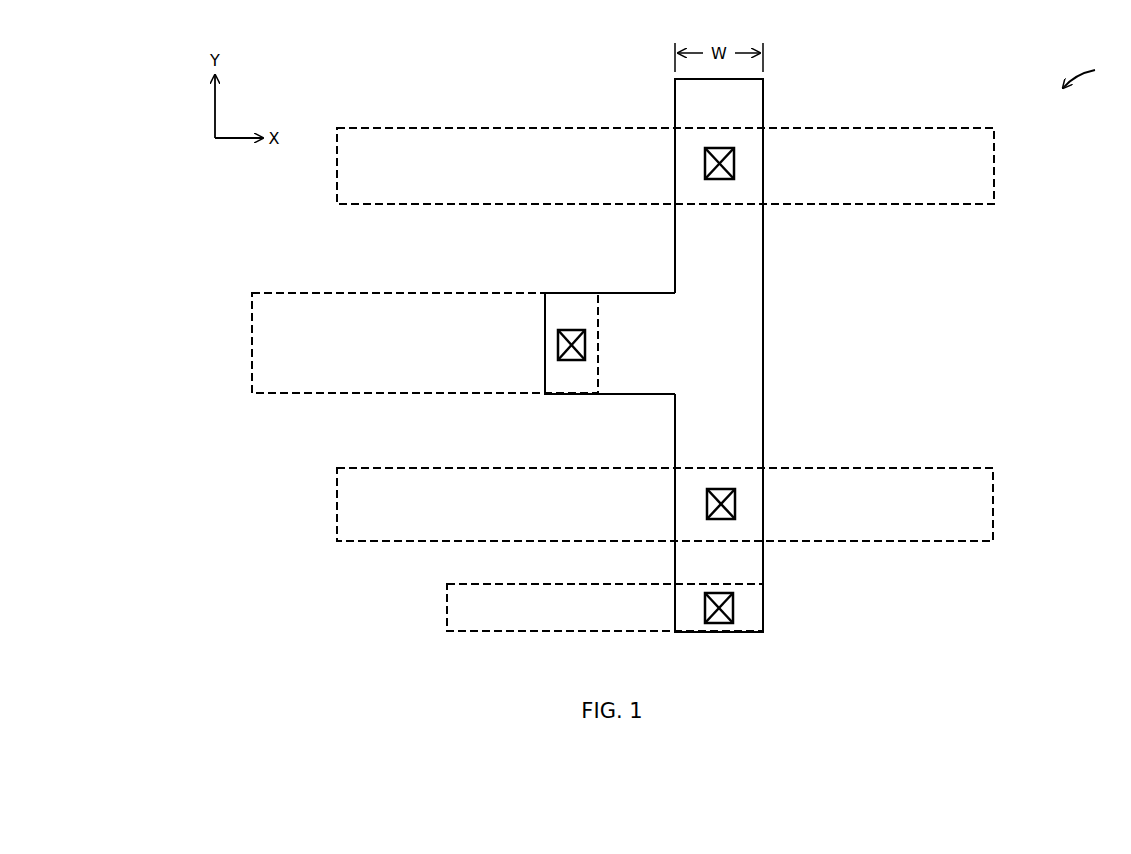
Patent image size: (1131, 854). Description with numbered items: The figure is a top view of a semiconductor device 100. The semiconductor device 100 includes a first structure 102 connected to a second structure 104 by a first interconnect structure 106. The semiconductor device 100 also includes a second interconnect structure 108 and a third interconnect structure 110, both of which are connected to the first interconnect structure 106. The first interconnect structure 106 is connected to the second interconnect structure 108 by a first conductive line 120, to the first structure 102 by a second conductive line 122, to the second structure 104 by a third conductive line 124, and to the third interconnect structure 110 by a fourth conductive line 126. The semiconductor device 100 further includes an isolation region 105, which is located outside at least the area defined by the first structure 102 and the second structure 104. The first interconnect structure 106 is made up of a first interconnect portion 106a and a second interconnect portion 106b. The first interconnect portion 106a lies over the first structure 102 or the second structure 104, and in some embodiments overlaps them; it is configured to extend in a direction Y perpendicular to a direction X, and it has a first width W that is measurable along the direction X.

The semiconductor device 100 is at (1082, 60).
The first structure 102 is at (966, 188).
The second structure 104 is at (967, 522).
The isolation region 105 is at (925, 353).
The first interconnect structure 106 is at (696, 347).
The first interconnect portion 106a is at (743, 382).
The second interconnect portion 106b is at (641, 370).
The second interconnect structure 108 is at (321, 380).
The third interconnect structure 110 is at (462, 592).
The first conductive line 120 is at (573, 330).
The second conductive line 122 is at (734, 179).
The third conductive line 124 is at (735, 519).
The fourth conductive line 126 is at (720, 620).